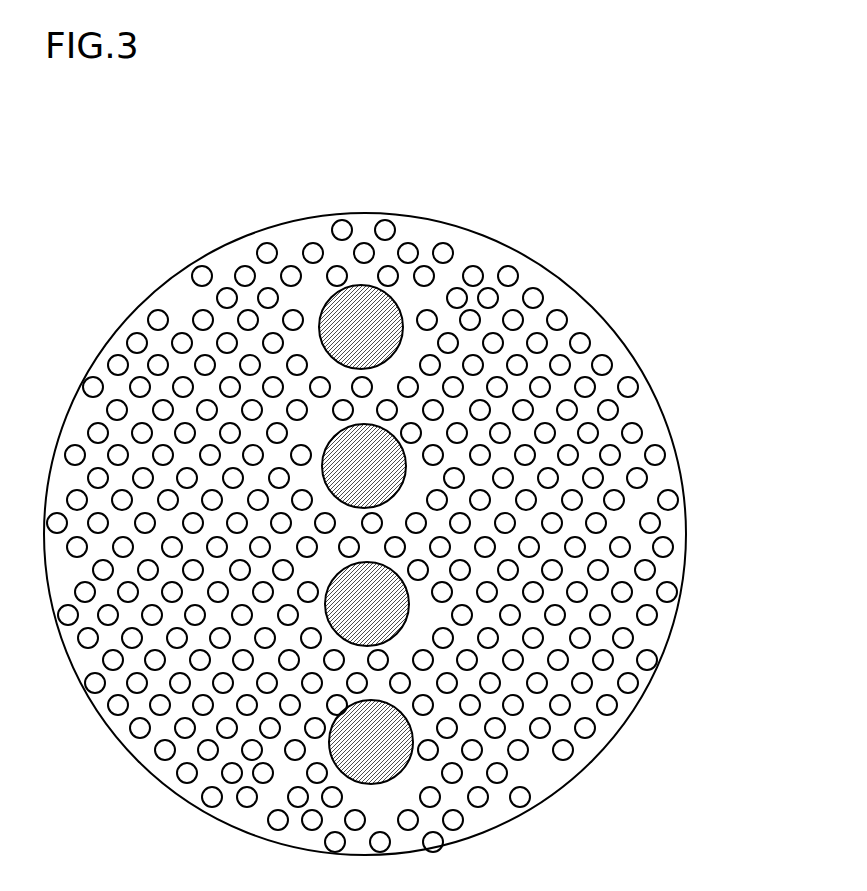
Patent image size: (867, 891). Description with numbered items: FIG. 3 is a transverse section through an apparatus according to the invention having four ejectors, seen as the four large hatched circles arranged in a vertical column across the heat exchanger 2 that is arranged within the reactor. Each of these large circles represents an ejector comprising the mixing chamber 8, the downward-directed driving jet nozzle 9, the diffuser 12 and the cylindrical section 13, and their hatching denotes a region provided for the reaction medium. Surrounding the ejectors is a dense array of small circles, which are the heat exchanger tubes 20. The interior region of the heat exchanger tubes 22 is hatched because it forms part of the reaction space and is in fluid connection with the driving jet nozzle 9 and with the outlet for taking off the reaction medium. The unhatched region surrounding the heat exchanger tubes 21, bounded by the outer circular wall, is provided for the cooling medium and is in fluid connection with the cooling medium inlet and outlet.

The heat exchanger 2 is at (404, 534).
The heat exchanger tubes 20 is at (404, 534).
The region surrounding the heat exchanger tubes 21 is at (672, 527).
The interior region of the heat exchanger tubes 22 is at (633, 388).
The mixing chamber 8 is at (474, 501).
The downward-directed driving jet nozzle 9 is at (474, 501).
The diffuser 12 is at (474, 501).
The cylindrical section 13 is at (387, 315).